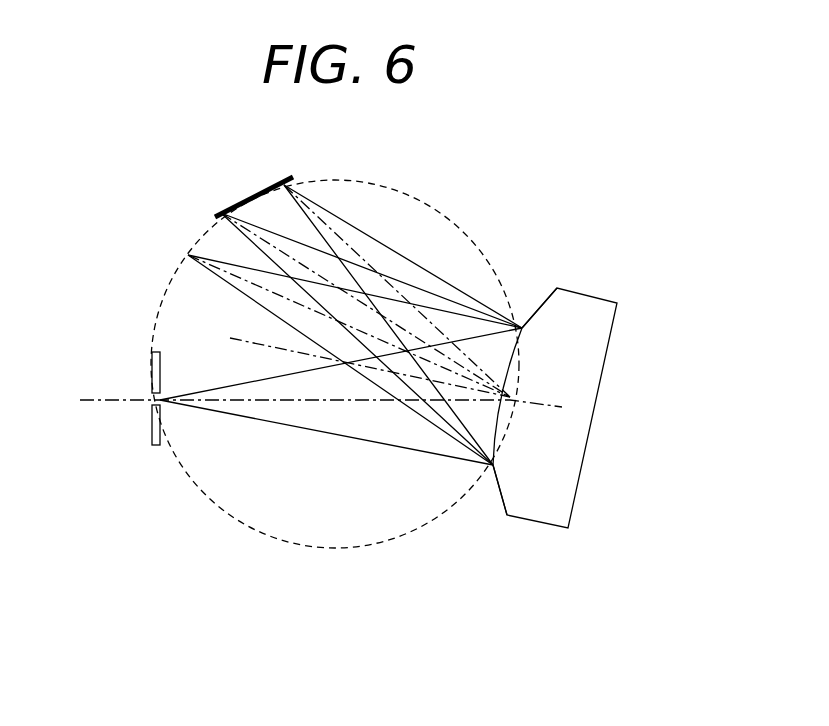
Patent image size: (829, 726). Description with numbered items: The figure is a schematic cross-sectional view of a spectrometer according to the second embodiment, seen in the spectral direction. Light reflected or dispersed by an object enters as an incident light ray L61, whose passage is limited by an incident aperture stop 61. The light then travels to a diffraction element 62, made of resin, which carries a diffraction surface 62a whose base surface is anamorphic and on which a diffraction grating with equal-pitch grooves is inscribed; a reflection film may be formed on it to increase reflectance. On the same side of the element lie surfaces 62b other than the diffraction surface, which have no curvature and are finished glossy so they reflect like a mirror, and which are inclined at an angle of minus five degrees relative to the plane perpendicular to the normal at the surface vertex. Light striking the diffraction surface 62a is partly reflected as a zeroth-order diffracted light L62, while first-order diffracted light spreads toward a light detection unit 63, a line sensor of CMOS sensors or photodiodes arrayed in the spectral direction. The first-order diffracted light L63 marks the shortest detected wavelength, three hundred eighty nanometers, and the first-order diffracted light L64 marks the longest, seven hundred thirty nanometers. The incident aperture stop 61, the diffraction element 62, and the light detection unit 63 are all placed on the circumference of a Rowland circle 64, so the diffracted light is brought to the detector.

The incident aperture stop 61 is at (151, 433).
The diffraction element 62 is at (584, 420).
The diffraction surface 62a is at (517, 385).
The surface other than the diffraction surface 62b is at (535, 320).
The light detection unit 63 is at (244, 200).
The Rowland circle 64 is at (365, 545).
The incident light ray L61 is at (213, 413).
The zeroth-order diffracted light L62 is at (217, 285).
The first-order diffracted light L63 is at (233, 232).
The first-order diffracted light L64 is at (312, 205).